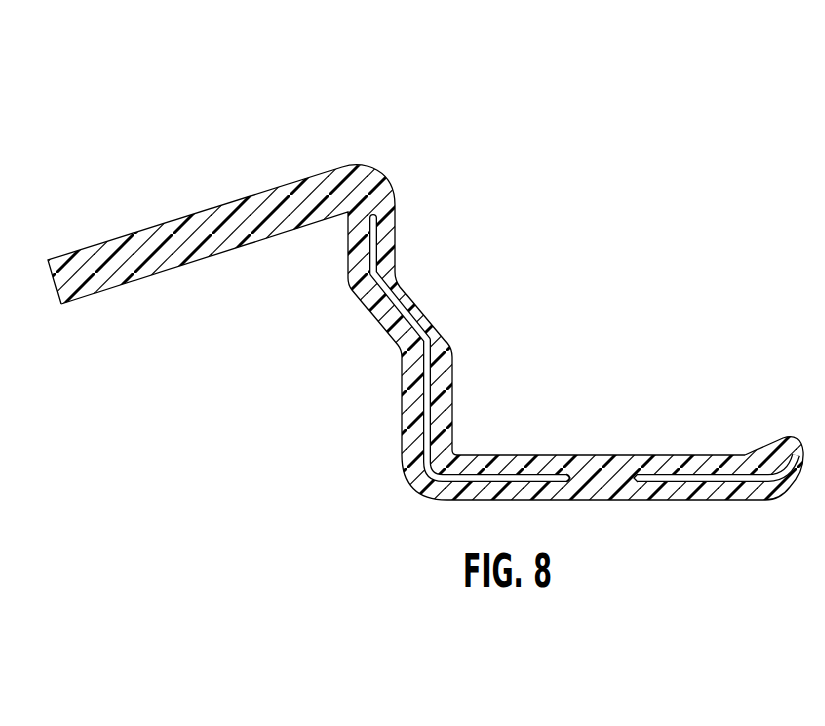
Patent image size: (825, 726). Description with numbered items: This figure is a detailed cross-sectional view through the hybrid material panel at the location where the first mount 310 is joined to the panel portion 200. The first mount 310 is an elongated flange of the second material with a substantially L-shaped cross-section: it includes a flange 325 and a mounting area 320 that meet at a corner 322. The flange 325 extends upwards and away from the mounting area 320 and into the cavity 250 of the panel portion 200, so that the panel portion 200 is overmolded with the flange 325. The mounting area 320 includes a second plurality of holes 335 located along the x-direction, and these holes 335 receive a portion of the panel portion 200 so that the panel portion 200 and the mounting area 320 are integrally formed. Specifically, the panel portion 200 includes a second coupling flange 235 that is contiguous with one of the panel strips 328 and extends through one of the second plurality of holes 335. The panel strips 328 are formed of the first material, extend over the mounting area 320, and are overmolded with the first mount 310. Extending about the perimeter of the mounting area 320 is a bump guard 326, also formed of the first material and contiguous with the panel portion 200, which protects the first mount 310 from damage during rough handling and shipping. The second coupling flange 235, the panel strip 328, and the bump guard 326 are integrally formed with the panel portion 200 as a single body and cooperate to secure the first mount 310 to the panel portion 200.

The panel portion 200 is at (192, 166).
The cavity 250 is at (378, 246).
The first mount 310 is at (560, 434).
The flange 325 is at (437, 323).
The mounting area 320 is at (502, 455).
The corner 322 is at (417, 463).
The second coupling flange 235 is at (612, 460).
The bump guard 326 is at (782, 442).
The second plurality of holes 335 is at (603, 501).
The panel strips 328 is at (688, 502).